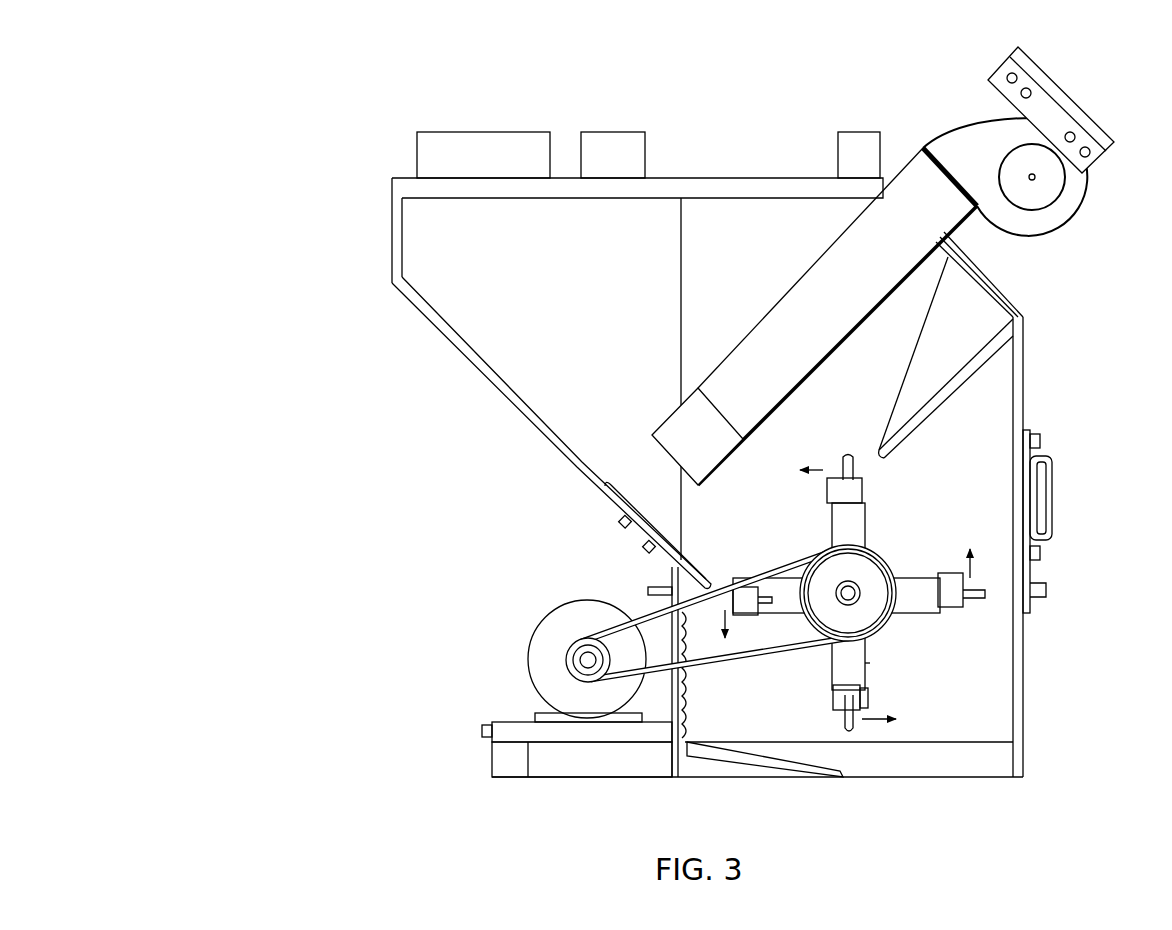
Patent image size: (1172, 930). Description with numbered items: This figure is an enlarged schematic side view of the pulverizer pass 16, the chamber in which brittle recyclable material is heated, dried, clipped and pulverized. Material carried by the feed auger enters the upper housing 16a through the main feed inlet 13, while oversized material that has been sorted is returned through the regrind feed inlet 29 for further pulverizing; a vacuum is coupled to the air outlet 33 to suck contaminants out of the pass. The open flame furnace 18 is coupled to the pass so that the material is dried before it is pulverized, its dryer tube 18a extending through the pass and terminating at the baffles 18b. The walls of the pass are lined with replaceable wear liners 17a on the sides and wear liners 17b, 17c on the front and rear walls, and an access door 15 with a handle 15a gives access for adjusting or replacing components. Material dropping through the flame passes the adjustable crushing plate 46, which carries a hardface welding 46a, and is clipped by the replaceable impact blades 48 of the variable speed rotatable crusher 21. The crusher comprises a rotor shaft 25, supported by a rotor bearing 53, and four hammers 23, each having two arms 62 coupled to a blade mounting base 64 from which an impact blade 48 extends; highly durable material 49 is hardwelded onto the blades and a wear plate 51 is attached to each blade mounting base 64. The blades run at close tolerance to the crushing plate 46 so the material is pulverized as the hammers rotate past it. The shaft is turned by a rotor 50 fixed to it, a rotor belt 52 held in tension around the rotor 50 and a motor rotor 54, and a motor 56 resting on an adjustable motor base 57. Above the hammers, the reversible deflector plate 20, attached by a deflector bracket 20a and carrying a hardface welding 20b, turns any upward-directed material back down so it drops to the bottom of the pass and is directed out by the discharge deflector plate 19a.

The main feed inlet 13 is at (487, 130).
The regrind feed inlet 29 is at (612, 130).
The air outlet 33 is at (850, 165).
The pulverizer pass 16 is at (731, 110).
The upper housing 16a is at (448, 255).
The wear liner 17a is at (720, 272).
The wear liner 17b is at (683, 757).
The wear liner 17c is at (1023, 760).
The open flame furnace 18 is at (977, 111).
The dryer tube 18a is at (757, 326).
The baffles 18b is at (668, 418).
The deflector plate 20 is at (950, 395).
The deflector bracket 20a is at (1000, 333).
The hardface welding 20b is at (890, 452).
The access door 15 is at (1040, 452).
The handle 15a is at (1053, 500).
The adjustable crushing plate 46 is at (622, 500).
The hardface welding 46a is at (722, 535).
The wear plate 51 is at (820, 490).
The blade mounting base 64 is at (874, 490).
The rotatable crusher 21 is at (905, 540).
The rotor 50 is at (895, 563).
The highly durable material 49 is at (972, 590).
The rotor shaft 25 is at (900, 613).
The rotor bearing 53 is at (853, 601).
The hammers 23 is at (865, 628).
The arms 62 is at (872, 663).
The rotor belt 52 is at (656, 606).
The motor 56 is at (526, 633).
The motor rotor 54 is at (566, 662).
The adjustable motor base 57 is at (593, 747).
The discharge deflector plate 19a is at (757, 760).
The replaceable impact blade 48 is at (838, 718).